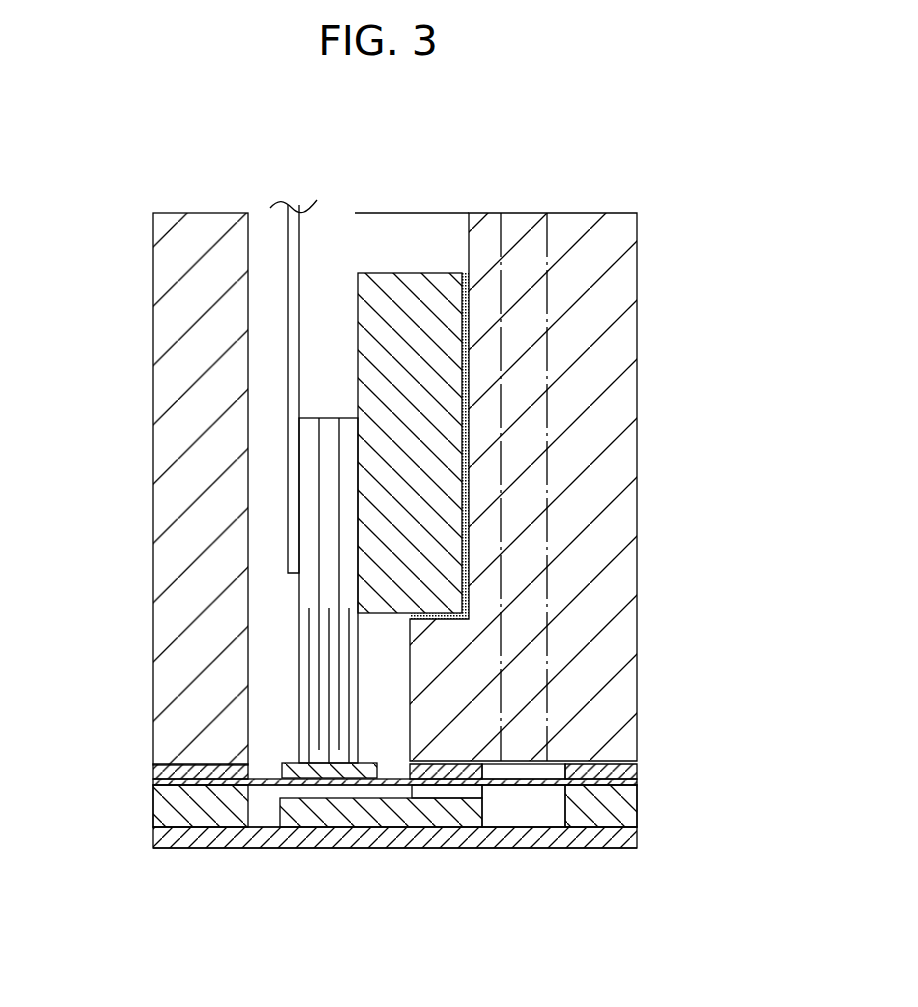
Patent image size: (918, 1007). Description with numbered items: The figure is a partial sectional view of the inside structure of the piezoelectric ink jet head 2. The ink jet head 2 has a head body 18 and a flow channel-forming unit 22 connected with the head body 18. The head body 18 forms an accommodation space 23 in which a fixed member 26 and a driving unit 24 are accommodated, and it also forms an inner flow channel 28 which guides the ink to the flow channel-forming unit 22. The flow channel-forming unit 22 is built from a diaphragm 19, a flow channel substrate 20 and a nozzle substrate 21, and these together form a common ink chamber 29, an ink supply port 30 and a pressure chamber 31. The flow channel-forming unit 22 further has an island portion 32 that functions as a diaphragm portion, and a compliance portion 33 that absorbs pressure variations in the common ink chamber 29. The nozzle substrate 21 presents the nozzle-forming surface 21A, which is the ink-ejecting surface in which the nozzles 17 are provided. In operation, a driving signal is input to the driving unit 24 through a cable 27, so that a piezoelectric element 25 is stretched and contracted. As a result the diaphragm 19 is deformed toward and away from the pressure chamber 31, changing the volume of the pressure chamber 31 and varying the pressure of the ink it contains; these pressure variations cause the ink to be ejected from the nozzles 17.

The ink jet head 2 is at (603, 211).
The nozzle 17 is at (452, 789).
The head body 18 is at (540, 487).
The diaphragm 19 is at (432, 697).
The flow channel substrate 20 is at (429, 854).
The nozzle substrate 21 is at (429, 898).
The nozzle-forming surface 21A is at (410, 850).
The flow channel-forming unit 22 is at (452, 789).
The accommodation space 23 is at (268, 413).
The driving unit 24 is at (340, 238).
The piezoelectric element 25 is at (300, 600).
The fixed member 26 is at (418, 283).
The cable 27 is at (293, 317).
The inner flow channel 28 is at (547, 345).
The common ink chamber 29 is at (540, 823).
The ink supply port 30 is at (458, 790).
The pressure chamber 31 is at (353, 790).
The island portion 32 is at (288, 763).
The compliance portion 33 is at (542, 760).